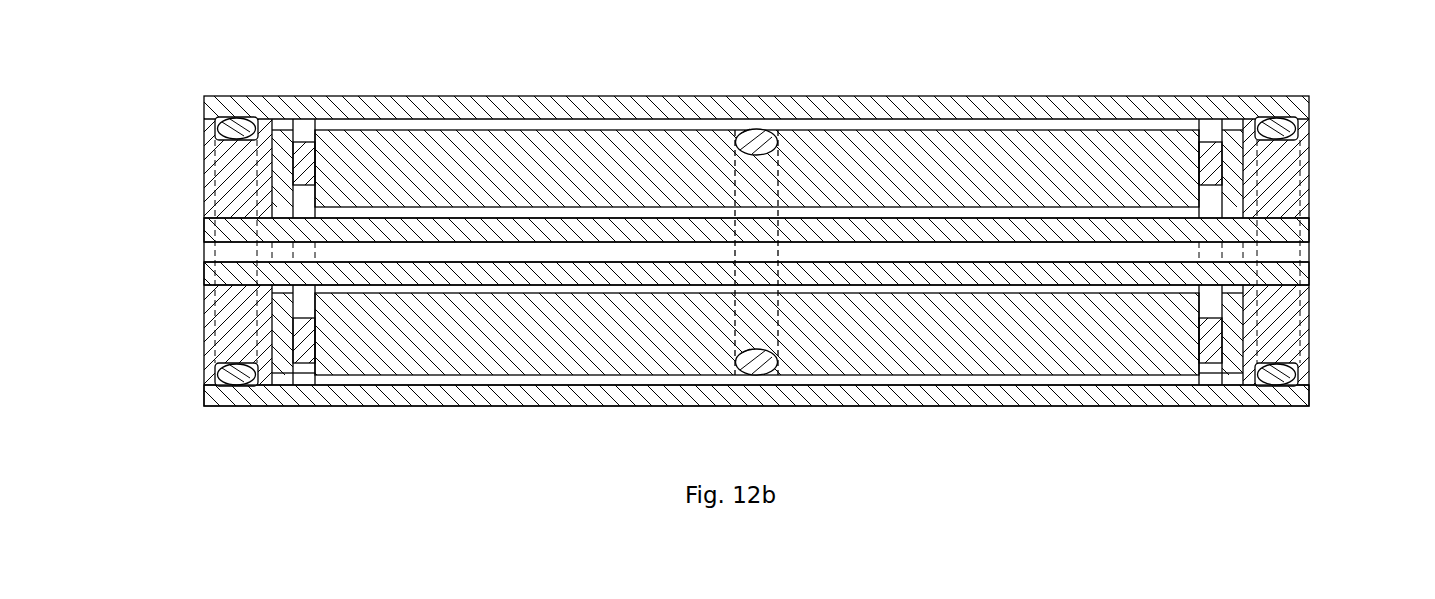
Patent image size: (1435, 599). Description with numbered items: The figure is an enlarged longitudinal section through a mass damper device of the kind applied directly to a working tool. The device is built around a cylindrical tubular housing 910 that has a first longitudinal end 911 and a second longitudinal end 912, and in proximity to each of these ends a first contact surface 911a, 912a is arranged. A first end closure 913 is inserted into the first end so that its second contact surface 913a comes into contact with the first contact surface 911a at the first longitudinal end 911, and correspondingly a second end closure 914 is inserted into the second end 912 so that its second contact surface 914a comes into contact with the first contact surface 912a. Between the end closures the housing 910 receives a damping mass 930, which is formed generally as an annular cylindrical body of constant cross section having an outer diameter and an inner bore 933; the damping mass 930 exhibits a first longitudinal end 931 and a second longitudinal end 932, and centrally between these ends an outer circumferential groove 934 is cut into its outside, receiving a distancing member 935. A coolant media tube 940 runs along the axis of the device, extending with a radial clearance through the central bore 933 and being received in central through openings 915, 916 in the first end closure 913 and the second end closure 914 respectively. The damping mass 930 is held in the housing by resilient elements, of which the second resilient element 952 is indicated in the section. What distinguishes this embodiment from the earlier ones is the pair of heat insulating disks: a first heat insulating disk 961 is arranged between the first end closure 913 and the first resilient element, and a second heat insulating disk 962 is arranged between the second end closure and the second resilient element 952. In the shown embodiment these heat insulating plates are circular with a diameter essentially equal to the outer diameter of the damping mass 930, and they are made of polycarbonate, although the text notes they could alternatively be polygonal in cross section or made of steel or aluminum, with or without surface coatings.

The cylindrical tubular housing 910 is at (640, 96).
The first longitudinal end 911 is at (204, 97).
The first contact surface 911a is at (258, 388).
The second longitudinal end 912 is at (1310, 108).
The first contact surface 912a is at (1257, 117).
The first end closure 913 is at (205, 270).
The second contact surface 913a is at (276, 119).
The second end closure 914 is at (1310, 190).
The second contact surface 914a is at (1243, 387).
The central through opening 915 is at (212, 278).
The central through opening 916 is at (1272, 283).
The damping mass 930 is at (1030, 128).
The first longitudinal end 931 is at (305, 207).
The second longitudinal end 932 is at (1200, 310).
The inner bore 933 is at (873, 224).
The outer circumferential groove 934 is at (762, 148).
The distancing member 935 is at (737, 135).
The coolant media tube 940 is at (945, 287).
The second resilient element 952 is at (1200, 373).
The first heat insulating disk 961 is at (284, 385).
The second heat insulating disk 962 is at (1237, 387).